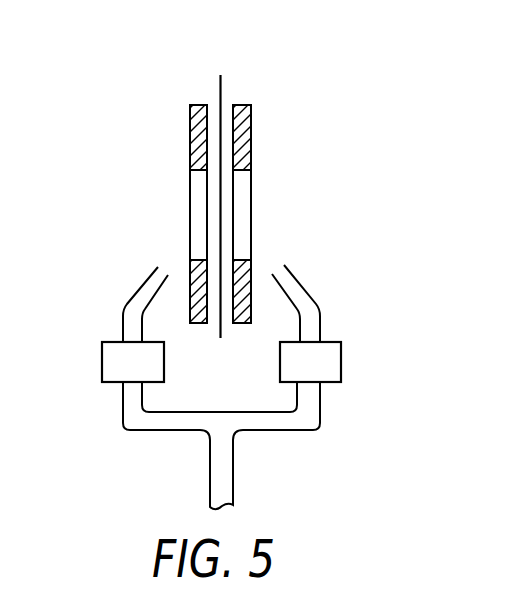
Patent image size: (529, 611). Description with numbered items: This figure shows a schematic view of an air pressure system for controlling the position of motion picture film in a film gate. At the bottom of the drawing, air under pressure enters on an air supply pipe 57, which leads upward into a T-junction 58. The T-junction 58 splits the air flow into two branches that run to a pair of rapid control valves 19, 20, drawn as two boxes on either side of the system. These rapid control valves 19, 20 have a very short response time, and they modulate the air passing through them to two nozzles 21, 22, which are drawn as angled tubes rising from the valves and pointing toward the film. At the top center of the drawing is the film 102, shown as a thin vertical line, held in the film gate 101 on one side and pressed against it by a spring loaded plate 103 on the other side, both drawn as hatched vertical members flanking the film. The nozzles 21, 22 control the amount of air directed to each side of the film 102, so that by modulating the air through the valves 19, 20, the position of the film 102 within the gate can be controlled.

The film 102 is at (223, 88).
The spring loaded plate 103 is at (190, 138).
The film gate 101 is at (253, 130).
The nozzle 22 is at (157, 270).
The nozzle 21 is at (278, 263).
The rapid control valve 20 is at (102, 360).
The rapid control valve 19 is at (342, 358).
The T-junction 58 is at (198, 410).
The air supply pipe 57 is at (235, 477).